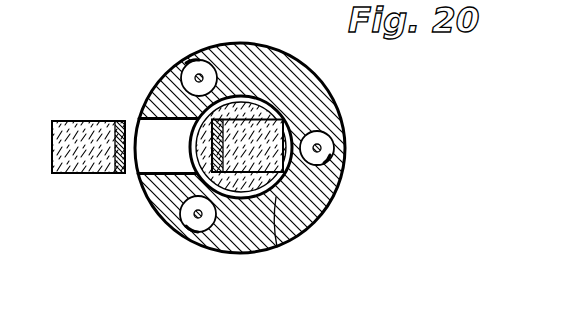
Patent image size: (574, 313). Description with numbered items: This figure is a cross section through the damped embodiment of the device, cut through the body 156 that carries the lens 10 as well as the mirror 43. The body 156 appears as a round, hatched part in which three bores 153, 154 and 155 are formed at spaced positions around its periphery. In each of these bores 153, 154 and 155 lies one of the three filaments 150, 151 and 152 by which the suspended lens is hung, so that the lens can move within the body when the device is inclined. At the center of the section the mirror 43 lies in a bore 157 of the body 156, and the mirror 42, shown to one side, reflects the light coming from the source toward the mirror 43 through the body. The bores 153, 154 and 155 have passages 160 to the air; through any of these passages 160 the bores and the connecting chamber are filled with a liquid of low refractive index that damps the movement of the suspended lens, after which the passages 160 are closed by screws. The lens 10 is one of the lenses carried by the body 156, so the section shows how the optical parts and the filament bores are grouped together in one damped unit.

The lens 10 is at (210, 157).
The mirror 42 is at (68, 133).
The mirror 43 is at (240, 137).
The filament 150 is at (319, 145).
The filament 151 is at (200, 74).
The filament 152 is at (194, 215).
The bore 153 is at (341, 175).
The bore 154 is at (213, 68).
The bore 155 is at (209, 238).
The body 156 is at (322, 210).
The bore 157 is at (277, 247).
The passage 160 is at (186, 62).